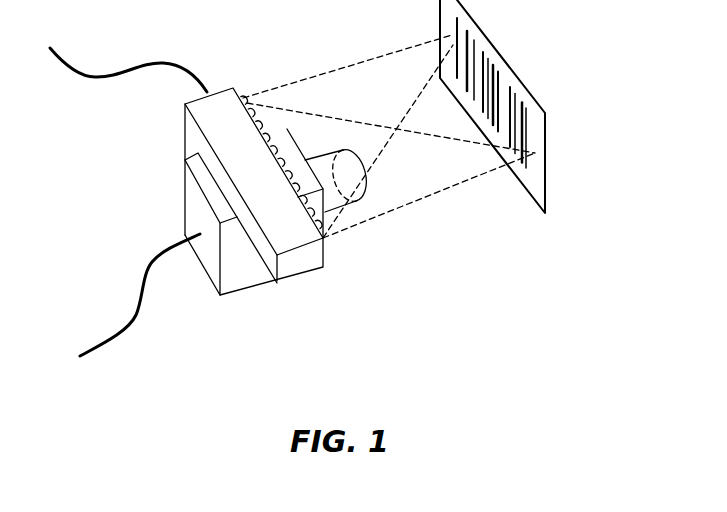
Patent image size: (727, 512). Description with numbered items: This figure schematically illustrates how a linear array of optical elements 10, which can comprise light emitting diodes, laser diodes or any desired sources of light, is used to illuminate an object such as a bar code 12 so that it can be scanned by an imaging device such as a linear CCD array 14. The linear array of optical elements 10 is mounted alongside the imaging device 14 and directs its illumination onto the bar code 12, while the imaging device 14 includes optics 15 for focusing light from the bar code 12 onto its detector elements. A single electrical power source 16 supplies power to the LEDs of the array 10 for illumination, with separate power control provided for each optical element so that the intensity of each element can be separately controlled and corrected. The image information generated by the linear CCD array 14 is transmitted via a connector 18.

The linear array of optical elements 10 is at (265, 227).
The bar code 12 is at (538, 186).
The linear CCD array 14 is at (232, 268).
The optics 15 is at (331, 151).
The electrical power source 16 is at (71, 64).
The connector 18 is at (112, 344).